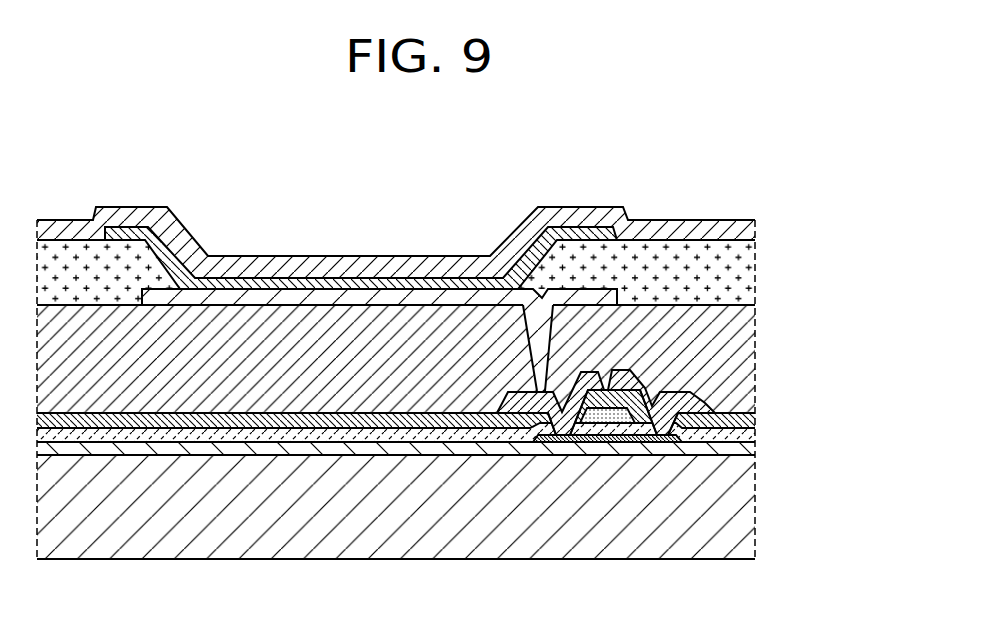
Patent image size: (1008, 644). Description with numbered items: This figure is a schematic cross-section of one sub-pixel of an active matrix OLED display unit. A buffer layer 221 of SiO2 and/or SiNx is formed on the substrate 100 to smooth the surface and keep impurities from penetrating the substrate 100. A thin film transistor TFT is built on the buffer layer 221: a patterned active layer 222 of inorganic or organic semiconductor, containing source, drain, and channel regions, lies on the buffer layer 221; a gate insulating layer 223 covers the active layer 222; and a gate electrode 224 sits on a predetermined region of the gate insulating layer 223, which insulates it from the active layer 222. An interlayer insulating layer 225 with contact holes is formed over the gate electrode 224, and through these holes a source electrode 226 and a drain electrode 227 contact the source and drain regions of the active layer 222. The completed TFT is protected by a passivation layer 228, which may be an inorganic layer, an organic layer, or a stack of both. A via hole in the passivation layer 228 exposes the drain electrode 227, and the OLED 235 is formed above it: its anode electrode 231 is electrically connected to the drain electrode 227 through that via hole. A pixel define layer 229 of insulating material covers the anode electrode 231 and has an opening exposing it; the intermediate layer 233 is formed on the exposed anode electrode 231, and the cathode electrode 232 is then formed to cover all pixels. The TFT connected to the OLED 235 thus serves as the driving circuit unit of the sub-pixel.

The substrate 100 is at (750, 507).
The buffer layer 221 is at (750, 448).
The active layer 222 is at (622, 440).
The gate insulating layer 223 is at (750, 437).
The gate electrode 224 is at (592, 424).
The interlayer insulating layer 225 is at (750, 420).
The source electrode 226 is at (684, 394).
The drain electrode 227 is at (537, 394).
The passivation layer 228 is at (750, 360).
The pixel define layer 229 is at (752, 273).
The anode electrode 231 is at (313, 300).
The cathode electrode 232 is at (312, 182).
The intermediate layer 233 is at (363, 287).
The OLED 235 is at (396, 267).
The thin film transistor TFT is at (596, 392).